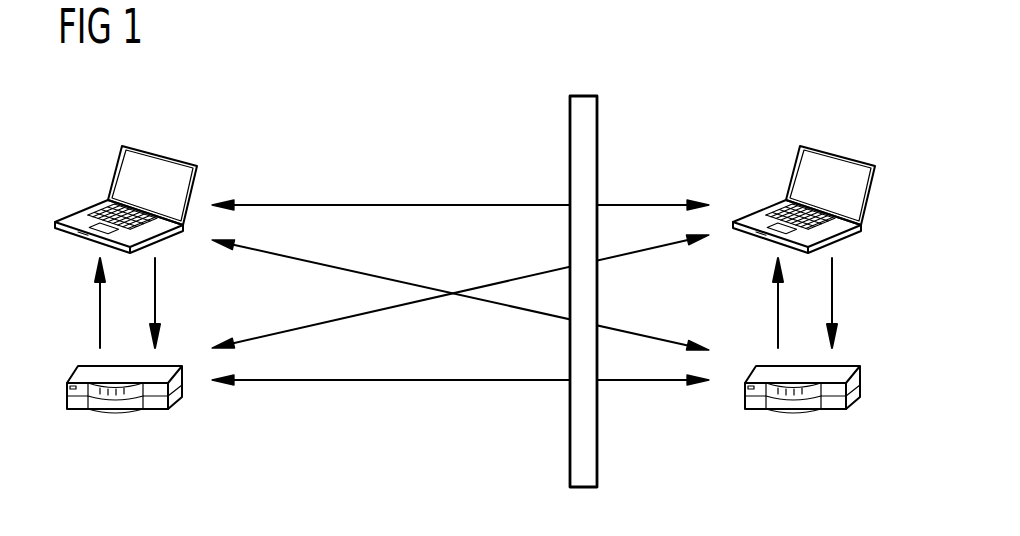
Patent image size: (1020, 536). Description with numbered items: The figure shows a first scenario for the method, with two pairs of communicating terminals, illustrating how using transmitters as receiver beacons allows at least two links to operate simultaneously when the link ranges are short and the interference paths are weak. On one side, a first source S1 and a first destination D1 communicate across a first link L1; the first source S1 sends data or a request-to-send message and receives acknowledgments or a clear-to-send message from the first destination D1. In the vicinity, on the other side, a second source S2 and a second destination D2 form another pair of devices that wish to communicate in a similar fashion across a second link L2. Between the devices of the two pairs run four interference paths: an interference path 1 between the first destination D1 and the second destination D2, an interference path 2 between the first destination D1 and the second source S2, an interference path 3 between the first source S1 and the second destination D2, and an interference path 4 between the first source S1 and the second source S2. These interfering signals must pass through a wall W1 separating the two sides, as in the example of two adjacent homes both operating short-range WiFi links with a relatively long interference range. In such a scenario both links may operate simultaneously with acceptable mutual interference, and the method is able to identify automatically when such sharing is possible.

The interference path 1 is at (458, 205).
The interference path 2 is at (392, 279).
The interference path 3 is at (390, 309).
The interference path 4 is at (459, 381).
The wall W1 is at (583, 96).
The first destination D1 is at (157, 162).
The second destination D2 is at (835, 162).
The first source S1 is at (118, 408).
The second source S2 is at (796, 408).
The first link L1 is at (109, 303).
The second link L2 is at (824, 303).